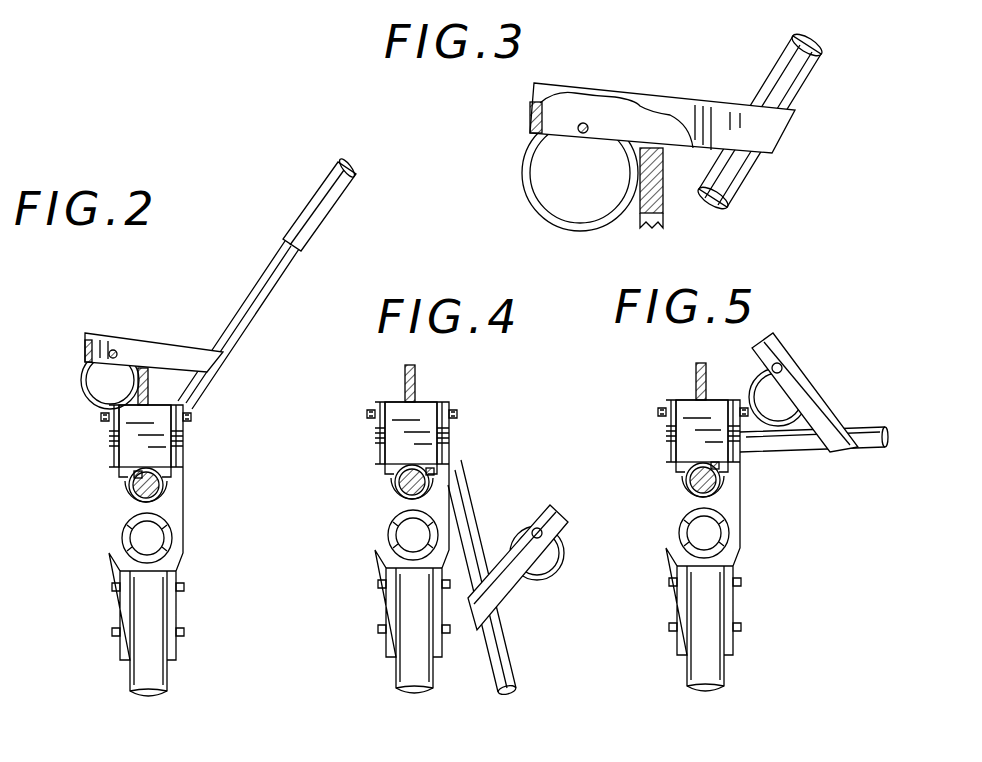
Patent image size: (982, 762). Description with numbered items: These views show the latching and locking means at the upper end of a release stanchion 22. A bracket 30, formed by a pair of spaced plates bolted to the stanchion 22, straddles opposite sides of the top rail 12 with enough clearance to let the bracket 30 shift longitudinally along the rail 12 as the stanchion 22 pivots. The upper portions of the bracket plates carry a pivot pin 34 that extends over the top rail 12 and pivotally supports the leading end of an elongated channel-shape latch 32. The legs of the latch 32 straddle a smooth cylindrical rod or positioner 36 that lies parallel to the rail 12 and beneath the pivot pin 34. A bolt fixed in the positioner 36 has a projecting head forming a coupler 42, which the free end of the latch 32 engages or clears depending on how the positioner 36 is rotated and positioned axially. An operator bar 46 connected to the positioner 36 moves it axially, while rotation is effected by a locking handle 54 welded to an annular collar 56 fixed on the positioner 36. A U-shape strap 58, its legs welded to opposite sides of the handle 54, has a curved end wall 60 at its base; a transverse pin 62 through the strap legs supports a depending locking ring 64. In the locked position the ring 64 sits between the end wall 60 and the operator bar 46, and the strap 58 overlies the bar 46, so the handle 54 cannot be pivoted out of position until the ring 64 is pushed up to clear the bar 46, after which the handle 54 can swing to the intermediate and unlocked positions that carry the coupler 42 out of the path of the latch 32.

In FIG. 2, the top rail 12 is at (171, 532).
In FIG. 4, the top rail 12 is at (444, 525).
In FIG. 5, the top rail 12 is at (729, 529).
In FIG. 2, the release stanchion 22 is at (170, 633).
In FIG. 4, the release stanchion 22 is at (392, 630).
In FIG. 5, the release stanchion 22 is at (733, 628).
In FIG. 2, the bracket 30 is at (120, 532).
In FIG. 4, the bracket 30 is at (388, 529).
In FIG. 5, the bracket 30 is at (681, 527).
In FIG. 2, the latch 32 is at (174, 436).
In FIG. 4, the latch 32 is at (440, 433).
In FIG. 5, the latch 32 is at (677, 431).
In FIG. 2, the pivot pin 34 is at (165, 398).
In FIG. 4, the pivot pin 34 is at (431, 393).
In FIG. 5, the pivot pin 34 is at (687, 393).
In FIG. 2, the positioner 36 is at (177, 485).
In FIG. 4, the positioner 36 is at (382, 483).
In FIG. 5, the positioner 36 is at (675, 490).
In FIG. 2, the coupler 42 is at (145, 442).
In FIG. 4, the coupler 42 is at (460, 455).
In FIG. 5, the coupler 42 is at (748, 464).
In FIG. 2, the bar 46 is at (169, 362).
In FIG. 3, the bar 46 is at (660, 196).
In FIG. 4, the bar 46 is at (433, 373).
In FIG. 5, the bar 46 is at (683, 369).
In FIG. 2, the locking handle 54 is at (336, 190).
In FIG. 3, the locking handle 54 is at (797, 72).
In FIG. 4, the locking handle 54 is at (506, 663).
In FIG. 5, the locking handle 54 is at (810, 452).
In FIG. 2, the collar 56 is at (121, 494).
In FIG. 4, the collar 56 is at (384, 502).
In FIG. 5, the collar 56 is at (677, 511).
In FIG. 2, the strap 58 is at (149, 345).
In FIG. 3, the strap 58 is at (652, 101).
In FIG. 4, the strap 58 is at (560, 514).
In FIG. 5, the strap 58 is at (814, 387).
In FIG. 2, the end wall 60 is at (88, 351).
In FIG. 3, the end wall 60 is at (530, 116).
In FIG. 2, the pin 62 is at (113, 350).
In FIG. 3, the pin 62 is at (585, 123).
In FIG. 4, the pin 62 is at (537, 533).
In FIG. 5, the pin 62 is at (777, 368).
In FIG. 2, the locking ring 64 is at (81, 378).
In FIG. 3, the locking ring 64 is at (522, 184).
In FIG. 4, the locking ring 64 is at (556, 580).
In FIG. 5, the locking ring 64 is at (755, 378).